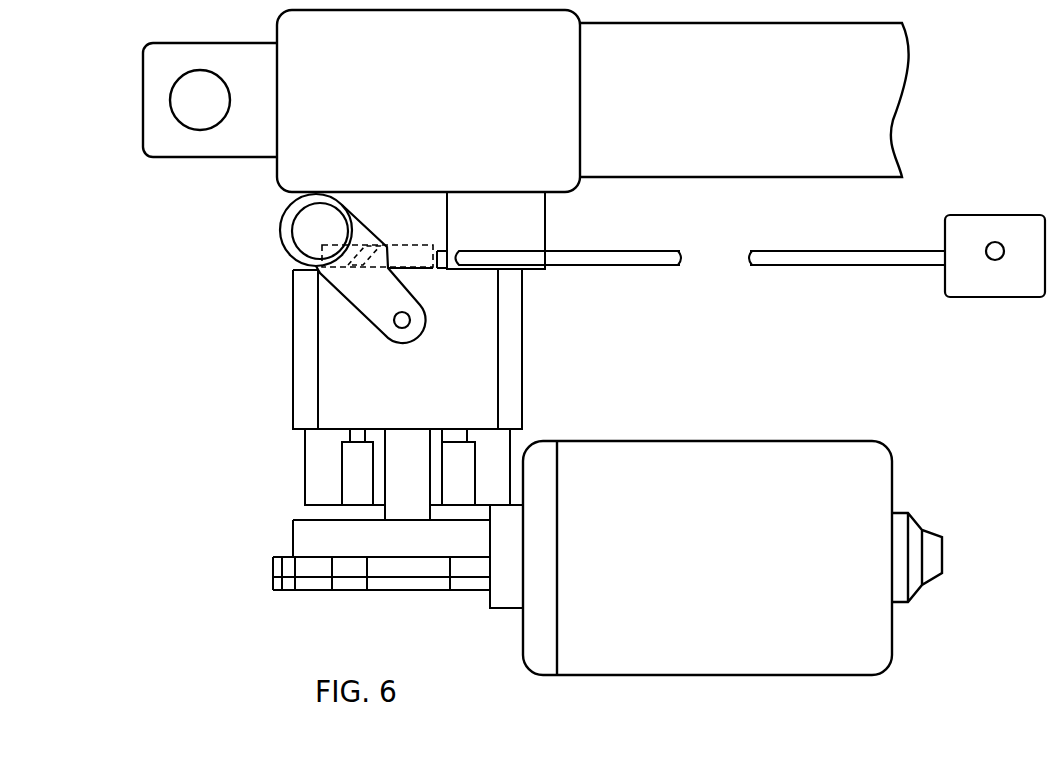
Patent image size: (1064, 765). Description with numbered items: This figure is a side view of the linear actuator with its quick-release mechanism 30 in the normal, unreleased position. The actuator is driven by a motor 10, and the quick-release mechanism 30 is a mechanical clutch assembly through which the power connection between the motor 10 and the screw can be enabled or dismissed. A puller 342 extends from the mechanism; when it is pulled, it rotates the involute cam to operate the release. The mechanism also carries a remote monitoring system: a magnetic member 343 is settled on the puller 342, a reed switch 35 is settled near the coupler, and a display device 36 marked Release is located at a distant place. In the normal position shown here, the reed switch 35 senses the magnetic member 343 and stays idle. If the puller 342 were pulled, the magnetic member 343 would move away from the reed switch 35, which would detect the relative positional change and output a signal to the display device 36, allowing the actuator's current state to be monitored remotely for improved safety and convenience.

The motor 10 is at (722, 453).
The quick-release mechanism 30 is at (233, 250).
The reed switch 35 is at (410, 245).
The display device 36 is at (1022, 224).
The puller 342 is at (368, 297).
The magnetic member 343 is at (388, 245).